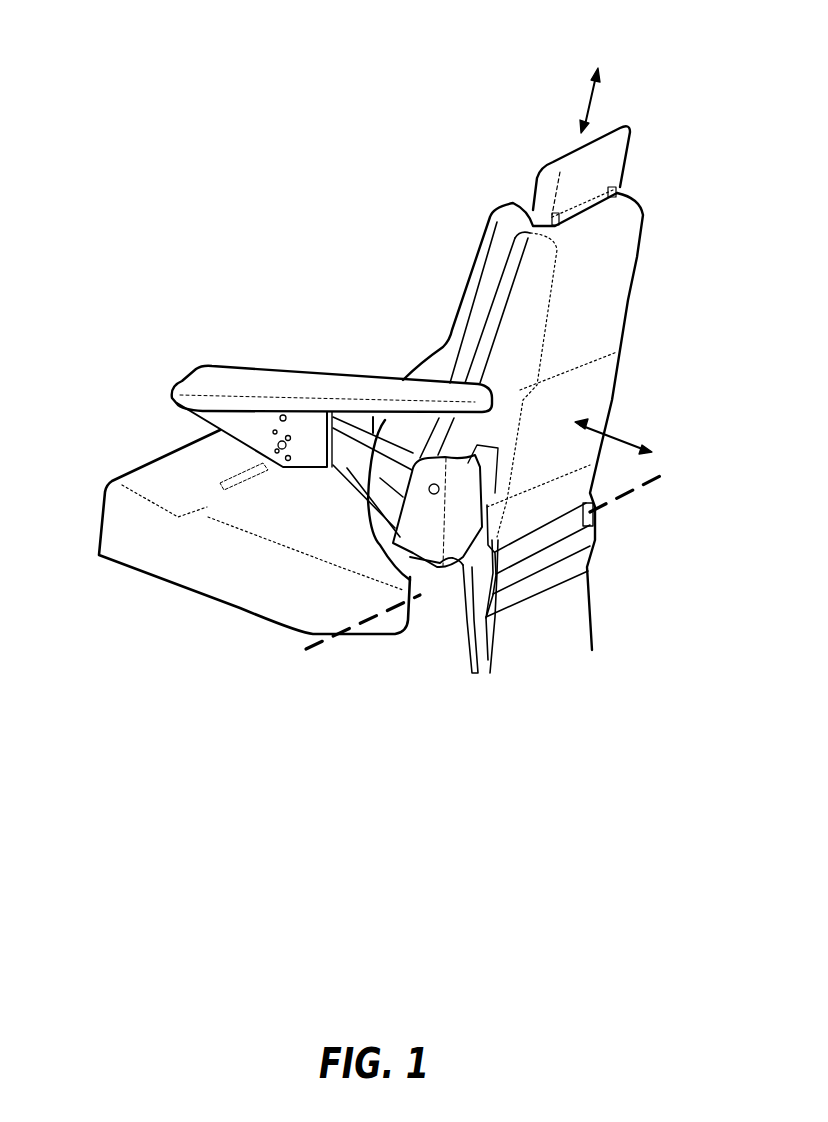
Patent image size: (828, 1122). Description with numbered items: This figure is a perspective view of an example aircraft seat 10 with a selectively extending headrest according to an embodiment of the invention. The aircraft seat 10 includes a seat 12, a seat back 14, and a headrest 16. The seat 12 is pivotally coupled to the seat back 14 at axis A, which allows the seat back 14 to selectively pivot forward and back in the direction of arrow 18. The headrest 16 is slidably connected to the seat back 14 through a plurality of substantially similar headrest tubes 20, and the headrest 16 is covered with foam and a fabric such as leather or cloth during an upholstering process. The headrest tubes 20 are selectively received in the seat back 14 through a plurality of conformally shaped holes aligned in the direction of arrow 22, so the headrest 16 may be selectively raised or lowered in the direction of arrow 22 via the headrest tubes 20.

The aircraft seat 10 is at (273, 96).
The seat 12 is at (277, 572).
The seat back 14 is at (590, 287).
The headrest 16 is at (598, 153).
The arrow 18 is at (615, 433).
The headrest tubes 20 is at (490, 213).
The arrow 22 is at (590, 101).